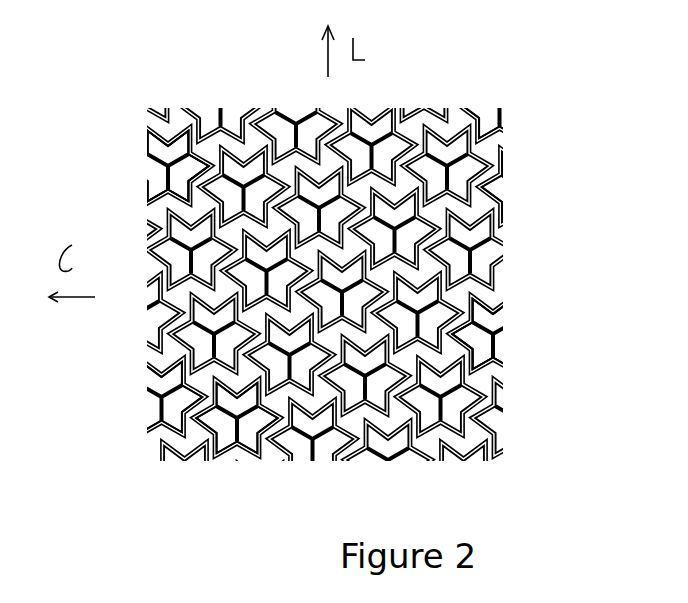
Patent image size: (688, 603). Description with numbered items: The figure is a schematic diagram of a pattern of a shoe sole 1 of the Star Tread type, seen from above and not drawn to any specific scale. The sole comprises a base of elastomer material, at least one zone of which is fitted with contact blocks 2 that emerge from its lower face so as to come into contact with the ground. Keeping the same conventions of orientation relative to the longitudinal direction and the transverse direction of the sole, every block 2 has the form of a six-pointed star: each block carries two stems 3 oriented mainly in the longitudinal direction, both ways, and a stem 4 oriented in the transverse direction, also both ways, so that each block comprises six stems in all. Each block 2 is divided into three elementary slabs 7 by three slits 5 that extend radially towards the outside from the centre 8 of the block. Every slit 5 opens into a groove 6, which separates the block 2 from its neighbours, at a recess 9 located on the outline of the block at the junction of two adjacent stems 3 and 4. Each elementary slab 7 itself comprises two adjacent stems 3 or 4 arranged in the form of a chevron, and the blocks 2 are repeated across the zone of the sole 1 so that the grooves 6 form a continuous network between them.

The shoe sole 1 is at (205, 92).
The block 2 is at (490, 152).
The stem 3 is at (480, 203).
The stem 4 is at (497, 322).
The slit 5 is at (498, 395).
The groove 6 is at (150, 360).
The elementary slab 7 is at (262, 465).
The centre 8 is at (160, 172).
The recess 9 is at (160, 227).